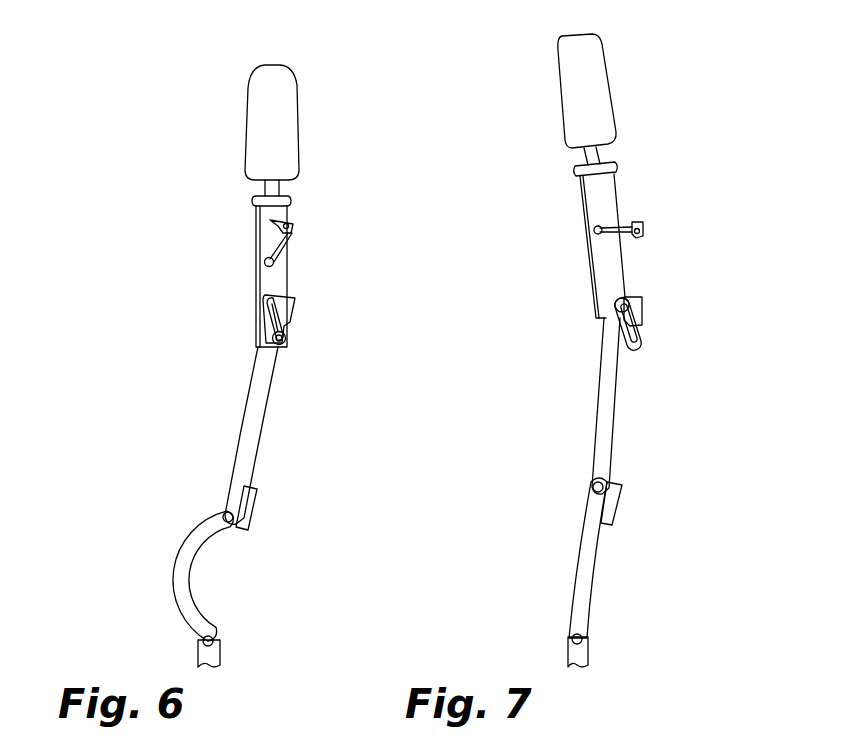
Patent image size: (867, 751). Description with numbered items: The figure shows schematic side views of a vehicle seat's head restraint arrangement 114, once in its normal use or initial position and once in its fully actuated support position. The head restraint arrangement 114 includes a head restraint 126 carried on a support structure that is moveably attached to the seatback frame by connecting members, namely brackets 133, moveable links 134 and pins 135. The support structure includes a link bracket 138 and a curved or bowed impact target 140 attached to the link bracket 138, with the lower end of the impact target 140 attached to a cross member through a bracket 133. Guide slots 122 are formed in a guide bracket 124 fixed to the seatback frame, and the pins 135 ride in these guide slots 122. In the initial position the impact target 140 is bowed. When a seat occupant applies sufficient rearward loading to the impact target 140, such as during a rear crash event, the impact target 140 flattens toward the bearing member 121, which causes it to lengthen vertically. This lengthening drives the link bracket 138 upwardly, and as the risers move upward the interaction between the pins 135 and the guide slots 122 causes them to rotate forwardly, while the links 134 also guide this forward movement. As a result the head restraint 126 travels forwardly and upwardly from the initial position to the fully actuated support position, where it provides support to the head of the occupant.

In FIG. 6, the head restraint arrangement 114 is at (324, 89).
In FIG. 7, the head restraint arrangement 114 is at (650, 67).
In FIG. 6, the head restraint 126 is at (318, 133).
In FIG. 7, the head restraint 126 is at (632, 153).
In FIG. 6, the moveable link 134 is at (290, 250).
In FIG. 7, the moveable link 134 is at (622, 228).
In FIG. 6, the guide slot 122 is at (296, 300).
In FIG. 7, the guide slot 122 is at (644, 325).
In FIG. 6, the guide bracket 124 is at (296, 308).
In FIG. 7, the guide bracket 124 is at (644, 308).
In FIG. 6, the pin 135 is at (288, 338).
In FIG. 7, the pin 135 is at (630, 300).
In FIG. 6, the link bracket 138 is at (265, 452).
In FIG. 7, the link bracket 138 is at (622, 432).
In FIG. 6, the bearing member 121 is at (262, 510).
In FIG. 7, the bearing member 121 is at (620, 510).
In FIG. 6, the impact target 140 is at (180, 585).
In FIG. 7, the impact target 140 is at (573, 567).
In FIG. 6, the bracket 133 is at (222, 655).
In FIG. 7, the bracket 133 is at (590, 655).